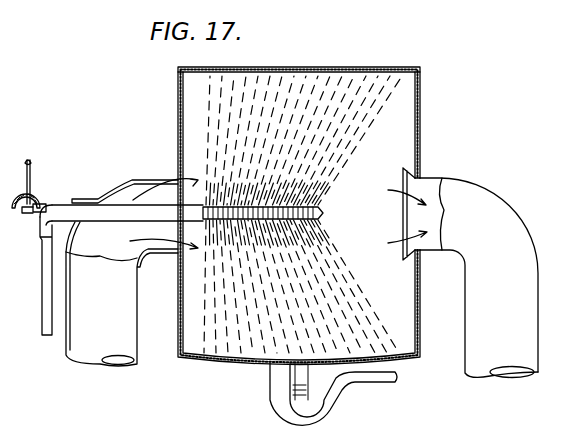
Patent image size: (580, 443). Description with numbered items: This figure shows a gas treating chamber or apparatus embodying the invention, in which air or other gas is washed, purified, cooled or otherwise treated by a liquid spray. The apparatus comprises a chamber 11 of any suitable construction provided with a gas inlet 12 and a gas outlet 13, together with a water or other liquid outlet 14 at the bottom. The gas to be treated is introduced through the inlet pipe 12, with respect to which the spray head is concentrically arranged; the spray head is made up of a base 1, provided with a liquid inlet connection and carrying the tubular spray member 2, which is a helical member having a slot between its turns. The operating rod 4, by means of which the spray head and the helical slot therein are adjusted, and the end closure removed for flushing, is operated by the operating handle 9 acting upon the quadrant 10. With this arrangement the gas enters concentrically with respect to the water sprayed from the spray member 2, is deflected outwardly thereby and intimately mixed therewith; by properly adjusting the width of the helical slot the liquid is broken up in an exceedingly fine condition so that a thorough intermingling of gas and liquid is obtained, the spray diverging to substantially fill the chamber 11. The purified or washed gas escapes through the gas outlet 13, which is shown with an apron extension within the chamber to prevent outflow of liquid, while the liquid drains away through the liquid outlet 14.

The base 1 is at (63, 212).
The tubular spray member 2 is at (322, 208).
The operating rod 4 is at (33, 212).
The operating handle 9 is at (26, 173).
The quadrant 10 is at (36, 206).
The chamber 11 is at (345, 68).
The gas inlet 12 is at (143, 181).
The gas outlet 13 is at (489, 200).
The liquid outlet 14 is at (290, 398).